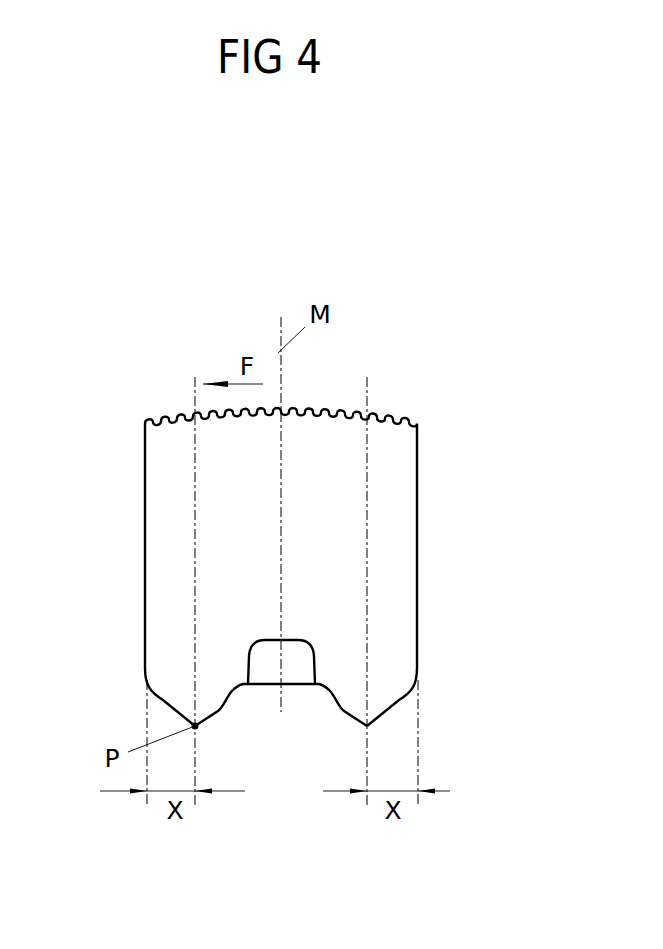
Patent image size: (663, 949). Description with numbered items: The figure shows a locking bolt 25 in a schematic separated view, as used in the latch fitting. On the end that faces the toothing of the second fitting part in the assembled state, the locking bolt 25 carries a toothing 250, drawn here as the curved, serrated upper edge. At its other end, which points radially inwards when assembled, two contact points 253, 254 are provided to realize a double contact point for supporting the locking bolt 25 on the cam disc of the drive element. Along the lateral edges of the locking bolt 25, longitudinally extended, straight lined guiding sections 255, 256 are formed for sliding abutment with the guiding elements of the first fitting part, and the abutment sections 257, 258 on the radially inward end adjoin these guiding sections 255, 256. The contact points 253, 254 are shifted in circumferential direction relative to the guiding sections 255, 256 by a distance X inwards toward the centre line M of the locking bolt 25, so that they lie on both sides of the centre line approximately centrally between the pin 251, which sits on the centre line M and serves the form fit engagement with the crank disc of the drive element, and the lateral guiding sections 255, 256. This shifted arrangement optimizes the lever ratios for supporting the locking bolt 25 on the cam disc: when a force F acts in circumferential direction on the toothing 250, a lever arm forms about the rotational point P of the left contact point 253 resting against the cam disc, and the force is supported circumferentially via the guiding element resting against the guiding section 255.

The locking bolt 25 is at (397, 571).
The toothing 250 is at (308, 412).
The pin 251 is at (292, 653).
The contact point 253 is at (208, 708).
The contact point 254 is at (360, 708).
The guiding section 255 is at (143, 565).
The guiding section 256 is at (418, 604).
The abutment section 257 is at (165, 708).
The abutment section 258 is at (390, 708).